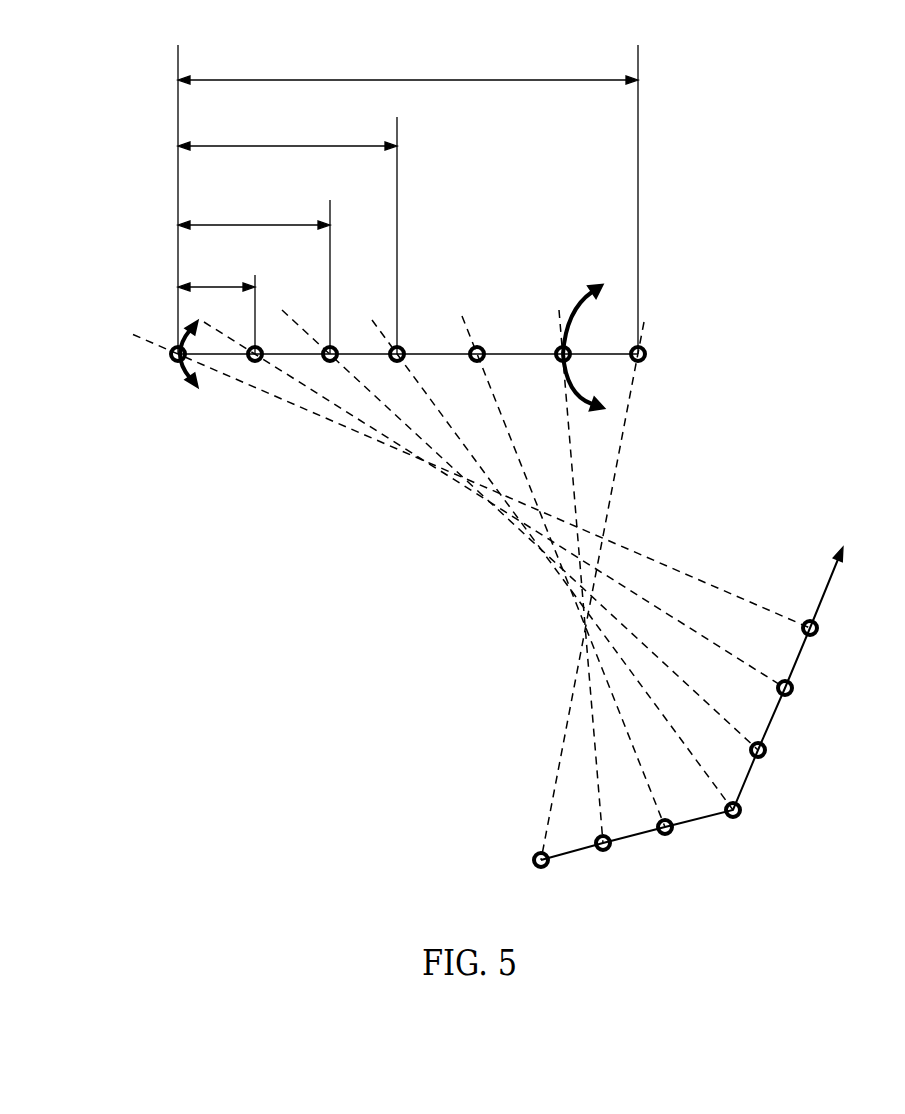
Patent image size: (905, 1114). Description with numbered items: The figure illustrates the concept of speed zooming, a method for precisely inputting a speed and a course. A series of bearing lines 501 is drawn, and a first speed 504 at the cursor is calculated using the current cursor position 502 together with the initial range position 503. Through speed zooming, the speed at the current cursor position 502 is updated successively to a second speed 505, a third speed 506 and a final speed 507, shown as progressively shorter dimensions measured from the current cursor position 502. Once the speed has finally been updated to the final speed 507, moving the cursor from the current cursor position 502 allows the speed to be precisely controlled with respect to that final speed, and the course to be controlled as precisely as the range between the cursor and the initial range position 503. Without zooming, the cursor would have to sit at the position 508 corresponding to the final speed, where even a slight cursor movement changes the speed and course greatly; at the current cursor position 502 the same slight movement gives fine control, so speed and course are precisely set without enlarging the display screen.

The bearing lines 501 is at (563, 592).
The current cursor position 502 is at (167, 355).
The initial range position 503 is at (650, 350).
The speed V0 504 is at (450, 45).
The speed V1 505 is at (280, 137).
The speed V2 506 is at (262, 213).
The speed V3 507 is at (207, 272).
The position corresponding to speed V3 508 is at (575, 300).